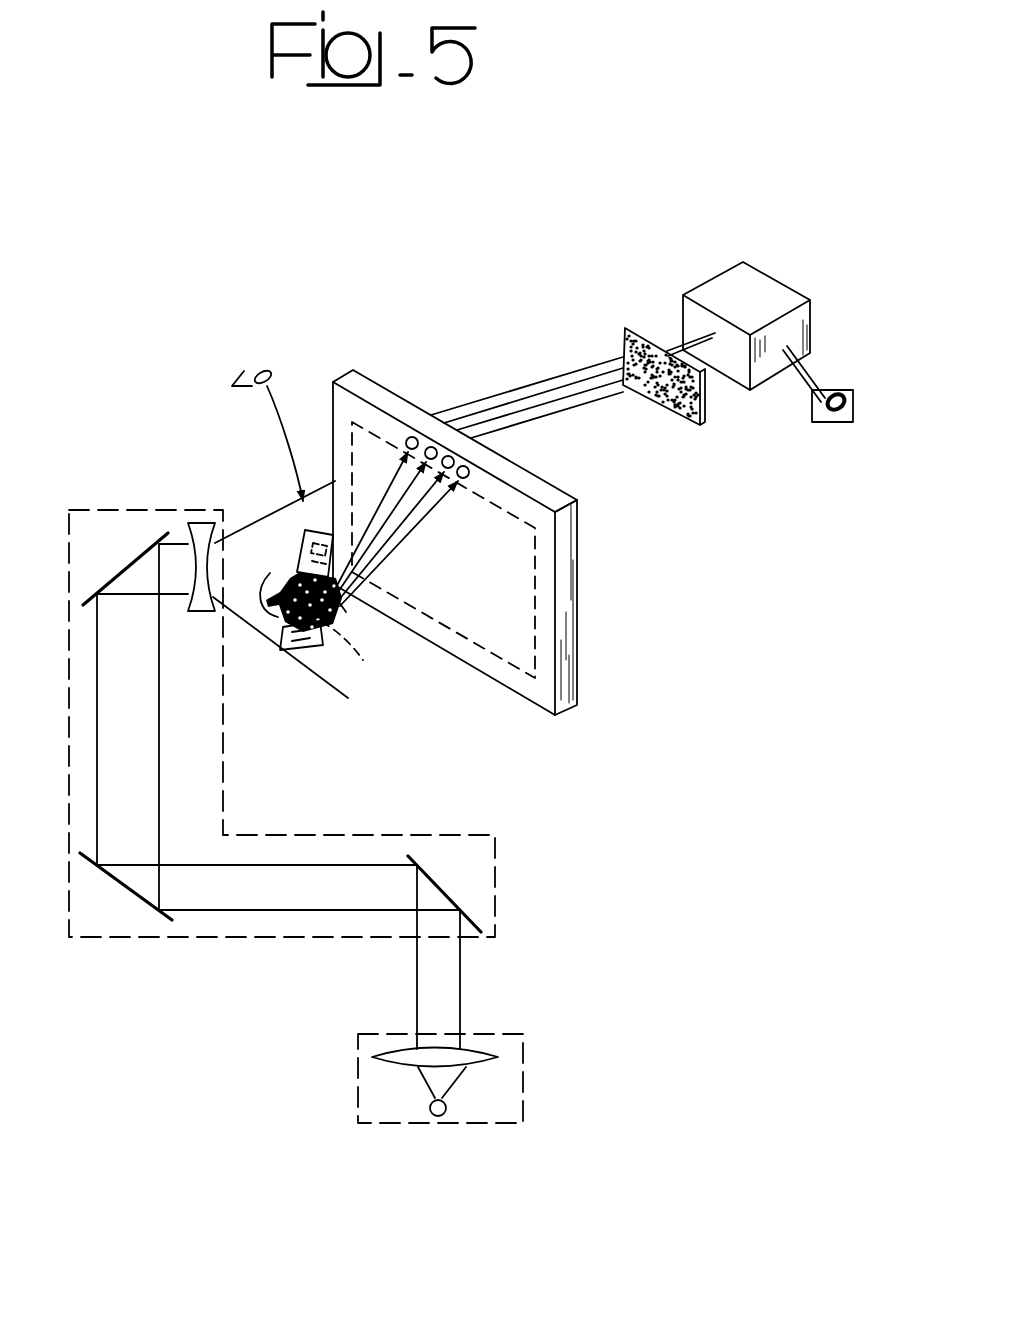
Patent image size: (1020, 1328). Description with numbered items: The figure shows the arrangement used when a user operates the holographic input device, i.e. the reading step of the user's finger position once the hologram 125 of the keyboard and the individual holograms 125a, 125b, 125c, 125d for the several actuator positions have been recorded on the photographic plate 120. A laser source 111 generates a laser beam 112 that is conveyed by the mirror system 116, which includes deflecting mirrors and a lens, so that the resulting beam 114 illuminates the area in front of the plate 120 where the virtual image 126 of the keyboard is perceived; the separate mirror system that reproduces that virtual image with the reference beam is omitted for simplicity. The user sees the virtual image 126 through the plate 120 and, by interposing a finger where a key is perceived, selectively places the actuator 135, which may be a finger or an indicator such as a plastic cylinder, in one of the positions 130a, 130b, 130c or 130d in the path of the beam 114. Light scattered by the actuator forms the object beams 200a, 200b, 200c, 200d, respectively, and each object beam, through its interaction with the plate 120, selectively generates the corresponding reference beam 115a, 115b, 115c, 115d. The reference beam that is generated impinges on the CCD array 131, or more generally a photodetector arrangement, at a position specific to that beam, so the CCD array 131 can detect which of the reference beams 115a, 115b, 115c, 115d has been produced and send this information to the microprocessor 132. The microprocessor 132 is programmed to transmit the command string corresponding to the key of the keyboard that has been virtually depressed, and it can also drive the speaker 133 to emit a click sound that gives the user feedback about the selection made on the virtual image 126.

The laser source 111 is at (523, 1090).
The laser beam 112 is at (458, 992).
The beam 114 is at (267, 520).
The reference beam 115a is at (522, 387).
The reference beam 115b is at (557, 386).
The reference beam 115c is at (573, 408).
The reference beam 115d is at (605, 394).
The mirror system 116 is at (339, 680).
The photographic plate 120 is at (495, 552).
The hologram 125 is at (517, 662).
The hologram 125a is at (410, 436).
The hologram 125b is at (428, 445).
The hologram 125c is at (454, 461).
The hologram 125d is at (470, 477).
The virtual image 126 is at (363, 660).
The actuator position 130a is at (284, 584).
The actuator position 130b is at (262, 612).
The actuator position 130c is at (382, 594).
The actuator position 130d is at (315, 652).
The CCD array 131 is at (700, 425).
The microprocessor 132 is at (812, 320).
The speaker 133 is at (855, 408).
The actuator 135 is at (267, 418).
The object beam 200a is at (335, 493).
The object beam 200b is at (354, 485).
The object beam 200c is at (338, 588).
The object beam 200d is at (336, 594).